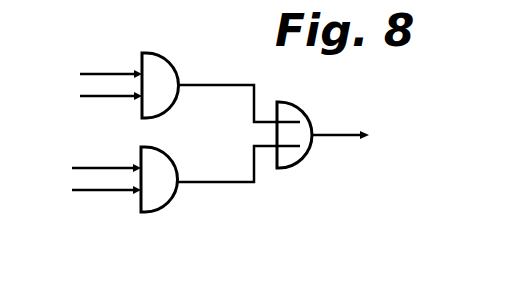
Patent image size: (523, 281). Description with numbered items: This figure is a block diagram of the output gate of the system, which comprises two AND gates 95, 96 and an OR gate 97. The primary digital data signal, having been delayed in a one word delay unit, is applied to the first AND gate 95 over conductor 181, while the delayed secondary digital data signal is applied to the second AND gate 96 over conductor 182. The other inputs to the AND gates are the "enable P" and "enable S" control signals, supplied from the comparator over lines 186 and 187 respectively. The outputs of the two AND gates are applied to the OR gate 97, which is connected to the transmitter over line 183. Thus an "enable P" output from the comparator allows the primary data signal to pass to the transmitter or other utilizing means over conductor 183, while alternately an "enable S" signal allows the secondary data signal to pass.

The AND gate 95 is at (168, 72).
The AND gate 96 is at (163, 202).
The OR gate 97 is at (292, 155).
The conductor 181 is at (95, 74).
The conductor 182 is at (103, 168).
The line 183 is at (340, 133).
The line 186 is at (93, 96).
The line 187 is at (92, 190).